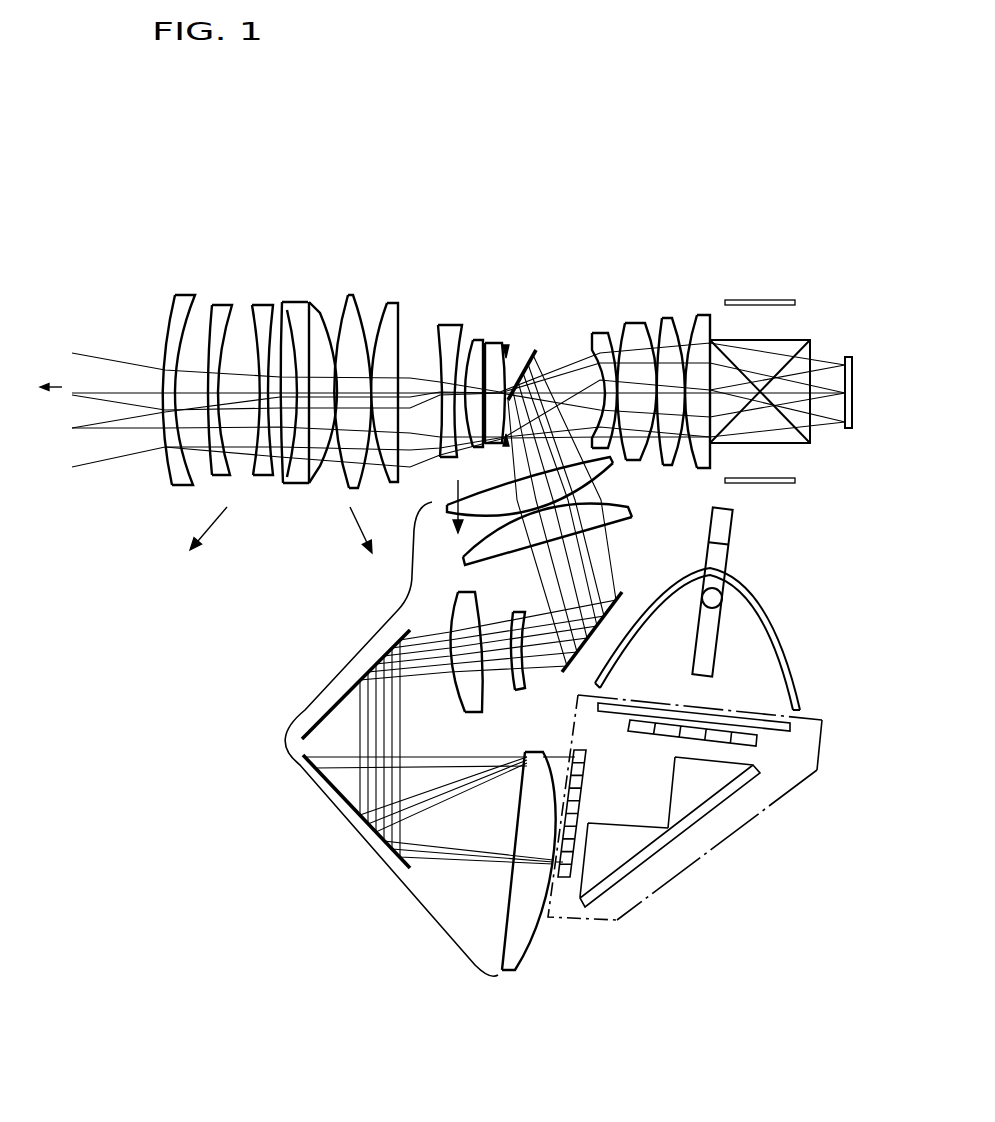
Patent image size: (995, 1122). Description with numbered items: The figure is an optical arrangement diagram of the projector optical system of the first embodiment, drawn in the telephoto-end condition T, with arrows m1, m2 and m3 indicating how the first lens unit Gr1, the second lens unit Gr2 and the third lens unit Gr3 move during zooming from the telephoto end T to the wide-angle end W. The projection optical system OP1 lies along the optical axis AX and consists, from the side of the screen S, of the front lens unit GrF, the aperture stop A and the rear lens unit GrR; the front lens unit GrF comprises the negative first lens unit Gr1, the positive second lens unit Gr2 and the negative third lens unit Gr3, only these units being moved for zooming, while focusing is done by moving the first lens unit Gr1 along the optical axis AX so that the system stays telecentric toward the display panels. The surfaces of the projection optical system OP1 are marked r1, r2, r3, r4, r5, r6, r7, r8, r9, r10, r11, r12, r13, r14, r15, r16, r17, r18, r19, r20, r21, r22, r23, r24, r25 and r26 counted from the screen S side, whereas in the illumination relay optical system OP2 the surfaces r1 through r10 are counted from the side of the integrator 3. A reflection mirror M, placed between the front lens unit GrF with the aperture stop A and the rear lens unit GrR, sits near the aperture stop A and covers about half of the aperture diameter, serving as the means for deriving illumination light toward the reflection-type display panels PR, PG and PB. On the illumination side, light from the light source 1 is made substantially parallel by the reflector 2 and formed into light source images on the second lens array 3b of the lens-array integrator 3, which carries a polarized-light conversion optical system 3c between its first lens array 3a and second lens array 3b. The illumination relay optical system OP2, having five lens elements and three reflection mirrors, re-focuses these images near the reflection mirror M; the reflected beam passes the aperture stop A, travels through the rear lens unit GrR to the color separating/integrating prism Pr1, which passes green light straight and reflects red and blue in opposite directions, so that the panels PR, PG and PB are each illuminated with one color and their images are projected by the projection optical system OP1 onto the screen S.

The projection optical system OP1 is at (818, 155).
The illumination relay optical system OP2 is at (362, 652).
The front lens unit GrF is at (148, 200).
The rear lens unit GrR is at (818, 200).
The first lens unit Gr1 is at (177, 487).
The second lens unit Gr2 is at (285, 488).
The third lens unit Gr3 is at (503, 459).
The first surface r1 is at (173, 296).
The second surface r2 is at (190, 294).
The third surface r3 is at (214, 304).
The fourth surface r4 is at (228, 304).
The fifth surface r5 is at (253, 304).
The sixth surface r6 is at (268, 304).
The seventh surface r7 is at (288, 301).
The eighth surface r8 is at (307, 301).
The ninth surface r9 is at (316, 301).
The tenth surface r10 is at (343, 300).
The eleventh surface r11 is at (370, 301).
The twelfth surface r12 is at (393, 302).
The thirteenth surface r13 is at (441, 324).
The fourteenth surface r14 is at (459, 324).
The fifteenth surface r15 is at (471, 339).
The sixteenth surface r16 is at (478, 339).
The seventeenth surface r17 is at (489, 342).
The eighteenth surface r18 is at (504, 342).
The nineteenth surface r19 is at (592, 338).
The twentieth surface r20 is at (604, 332).
The twenty-first surface r21 is at (626, 322).
The twenty-second surface r22 is at (646, 322).
The twenty-third surface r23 is at (667, 317).
The twenty-fourth surface r24 is at (675, 317).
The twenty-fifth surface r25 is at (703, 314).
The twenty-sixth surface r26 is at (813, 342).
The aperture stop A is at (508, 343).
The reflection mirror M is at (536, 350).
The optical axis AX is at (82, 393).
The screen S is at (17, 399).
The telephoto-end condition T is at (146, 500).
The wide-angle end condition W is at (147, 548).
The arrow indicating movement of first lens unit m1 is at (210, 533).
The arrow indicating movement of second lens unit m2 is at (357, 550).
The arrow indicating movement of third lens unit m3 is at (459, 527).
The color separating/integrating prism Pr1 is at (805, 445).
The reflection-type display panel for red light PR is at (772, 300).
The reflection-type display panel for green light PG is at (851, 357).
The reflection-type display panel for blue light PB is at (788, 484).
The light source 1 is at (718, 599).
The reflector 2 is at (780, 623).
The integrator 3 is at (733, 836).
The first lens array 3a is at (757, 738).
The second lens array 3b is at (579, 750).
The polarized-light conversion optical system 3c is at (612, 853).